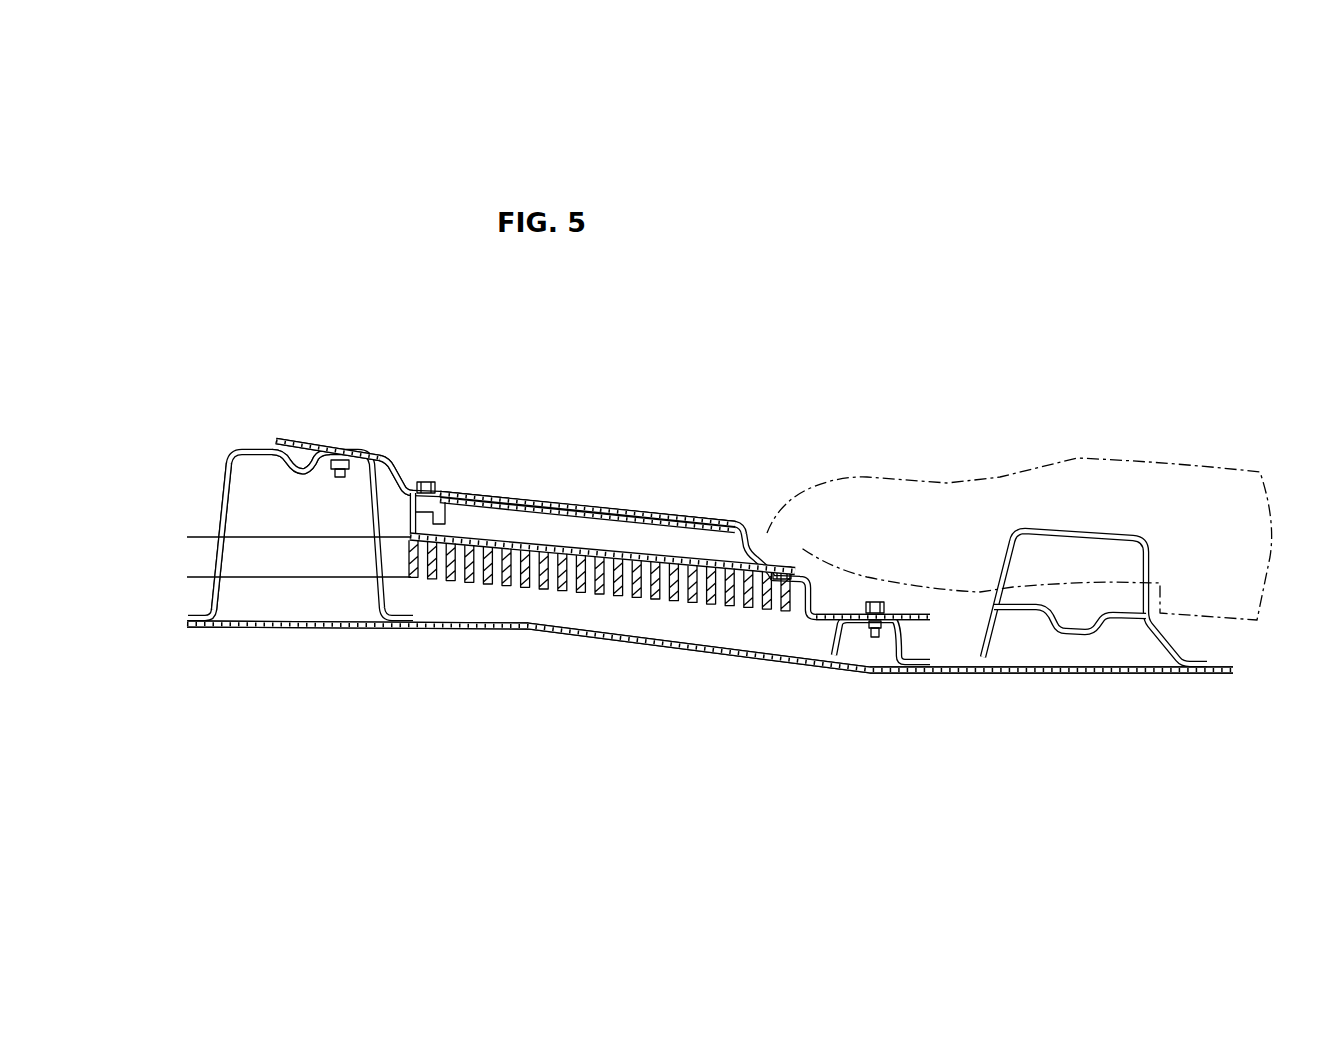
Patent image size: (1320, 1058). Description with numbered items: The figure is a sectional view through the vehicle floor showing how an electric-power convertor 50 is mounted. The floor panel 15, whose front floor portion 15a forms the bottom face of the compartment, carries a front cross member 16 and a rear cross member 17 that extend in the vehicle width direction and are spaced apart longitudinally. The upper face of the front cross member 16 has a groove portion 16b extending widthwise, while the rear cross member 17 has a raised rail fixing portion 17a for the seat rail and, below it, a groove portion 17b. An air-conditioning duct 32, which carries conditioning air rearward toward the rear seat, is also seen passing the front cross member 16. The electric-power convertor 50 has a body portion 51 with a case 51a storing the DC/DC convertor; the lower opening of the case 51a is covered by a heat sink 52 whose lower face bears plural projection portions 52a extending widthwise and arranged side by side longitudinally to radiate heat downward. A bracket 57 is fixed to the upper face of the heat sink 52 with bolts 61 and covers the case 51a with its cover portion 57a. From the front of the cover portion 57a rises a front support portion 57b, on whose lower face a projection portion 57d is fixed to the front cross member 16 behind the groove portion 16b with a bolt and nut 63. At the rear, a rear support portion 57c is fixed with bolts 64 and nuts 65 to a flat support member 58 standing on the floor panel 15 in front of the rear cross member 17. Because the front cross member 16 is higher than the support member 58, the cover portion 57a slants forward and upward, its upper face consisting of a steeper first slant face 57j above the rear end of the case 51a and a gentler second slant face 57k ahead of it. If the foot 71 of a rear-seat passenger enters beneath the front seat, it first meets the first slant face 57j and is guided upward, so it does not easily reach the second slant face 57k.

The floor panel 15 is at (710, 672).
The front floor portion 15a is at (532, 630).
The front cross member 16 is at (254, 504).
The groove portion 16b is at (290, 463).
The rear cross member 17 is at (1137, 603).
The rail fixing portion 17a is at (1086, 538).
The groove portion 17b is at (1077, 628).
The air-conditioning duct 32 is at (250, 537).
The electric-power convertor 50 is at (663, 548).
The body portion 51 is at (574, 476).
The case 51a is at (483, 496).
The heat sink 52 is at (602, 639).
The projection portions 52a is at (500, 582).
The bracket 57 is at (663, 490).
The cover portion 57a is at (601, 462).
The front support portion 57b is at (342, 445).
The rear support portion 57c is at (922, 612).
The projection portion 57d is at (322, 452).
The first slant face 57j is at (637, 447).
The second slant face 57k is at (640, 518).
The support member 58 is at (901, 644).
The bolts 61 is at (428, 481).
The nut 63 is at (364, 459).
The bolts 64 is at (874, 602).
The nuts 65 is at (865, 633).
The foot 71 is at (950, 483).